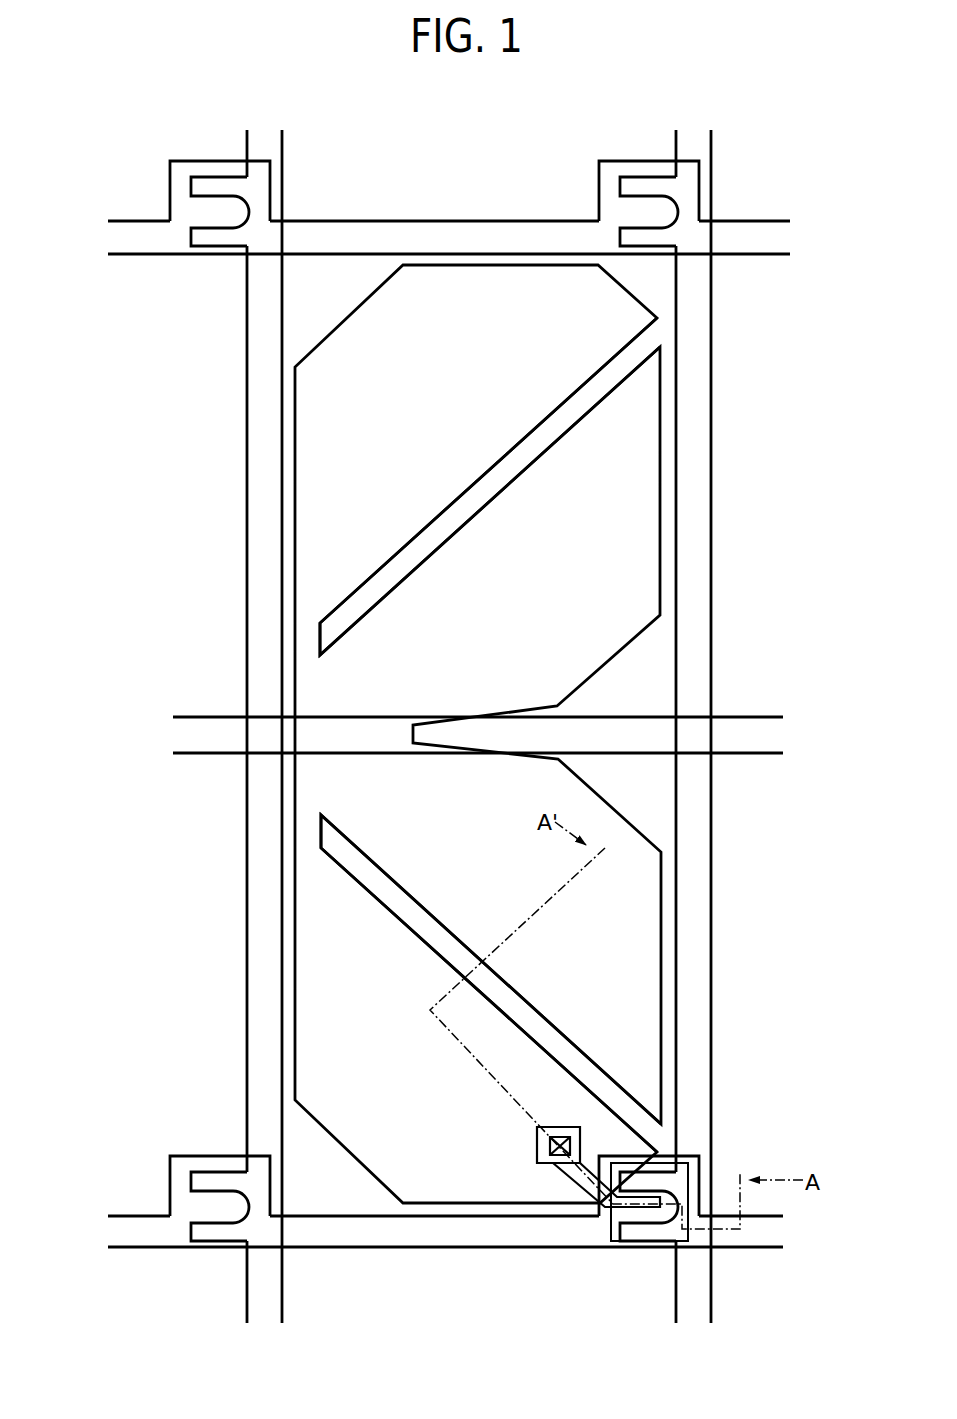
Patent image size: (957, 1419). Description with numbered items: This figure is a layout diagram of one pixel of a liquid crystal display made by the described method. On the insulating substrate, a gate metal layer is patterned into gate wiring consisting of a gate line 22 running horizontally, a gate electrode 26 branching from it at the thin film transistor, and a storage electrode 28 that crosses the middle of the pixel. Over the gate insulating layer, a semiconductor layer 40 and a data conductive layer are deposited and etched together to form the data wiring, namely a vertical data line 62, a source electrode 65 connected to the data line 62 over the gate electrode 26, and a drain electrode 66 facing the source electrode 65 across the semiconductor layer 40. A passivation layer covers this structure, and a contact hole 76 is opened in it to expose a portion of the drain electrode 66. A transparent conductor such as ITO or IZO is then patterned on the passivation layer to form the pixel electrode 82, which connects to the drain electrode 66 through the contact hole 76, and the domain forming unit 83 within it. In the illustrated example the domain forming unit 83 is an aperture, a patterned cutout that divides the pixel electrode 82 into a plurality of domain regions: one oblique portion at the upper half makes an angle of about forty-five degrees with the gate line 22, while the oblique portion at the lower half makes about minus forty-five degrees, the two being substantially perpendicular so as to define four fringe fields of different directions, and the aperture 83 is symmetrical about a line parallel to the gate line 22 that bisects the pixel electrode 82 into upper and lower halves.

The gate line 22 is at (440, 1250).
The gate electrode 26 is at (688, 1153).
The storage electrode 28 is at (762, 716).
The semiconductor layer 40 is at (690, 1238).
The data line 62 is at (713, 857).
The source electrode 65 is at (607, 1243).
The drain electrode 66 is at (613, 1229).
The contact hole 76 is at (537, 1146).
The pixel electrode 82 is at (662, 553).
The domain forming unit 83 is at (612, 397).